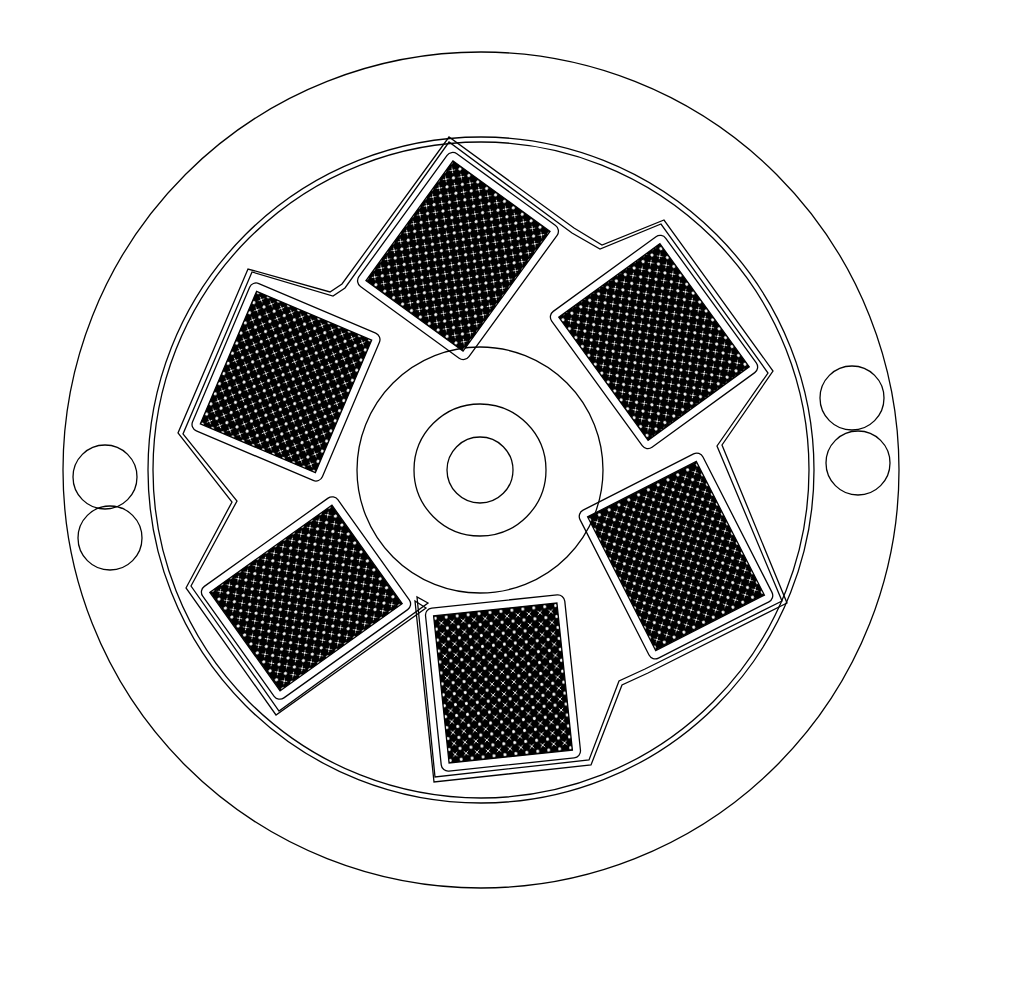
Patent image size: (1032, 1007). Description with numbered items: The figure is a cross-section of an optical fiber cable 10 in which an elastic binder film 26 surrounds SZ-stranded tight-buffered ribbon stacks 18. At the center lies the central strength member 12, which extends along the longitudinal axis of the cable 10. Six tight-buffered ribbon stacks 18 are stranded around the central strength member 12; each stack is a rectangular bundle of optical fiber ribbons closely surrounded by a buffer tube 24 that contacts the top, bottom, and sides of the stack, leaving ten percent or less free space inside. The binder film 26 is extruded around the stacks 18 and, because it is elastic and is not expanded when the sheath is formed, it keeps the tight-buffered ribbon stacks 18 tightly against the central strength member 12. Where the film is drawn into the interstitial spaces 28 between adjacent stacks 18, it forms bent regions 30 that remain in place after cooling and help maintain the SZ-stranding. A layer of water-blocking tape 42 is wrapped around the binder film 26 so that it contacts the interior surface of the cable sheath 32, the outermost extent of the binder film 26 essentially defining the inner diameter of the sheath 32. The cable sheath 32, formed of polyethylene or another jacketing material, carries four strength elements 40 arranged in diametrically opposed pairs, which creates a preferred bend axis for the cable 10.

The optical fiber cable 10 is at (475, 488).
The central strength member 12 is at (522, 346).
The tight-buffered ribbon stacks 18 is at (493, 423).
The buffer tube 24 is at (575, 735).
The binder film 26 is at (388, 712).
The interstitial spaces 28 is at (275, 500).
The bent region 30 is at (195, 462).
The cable sheath 32 is at (875, 598).
The strength elements 40 is at (90, 526).
The water-blocking tape 42 is at (197, 290).